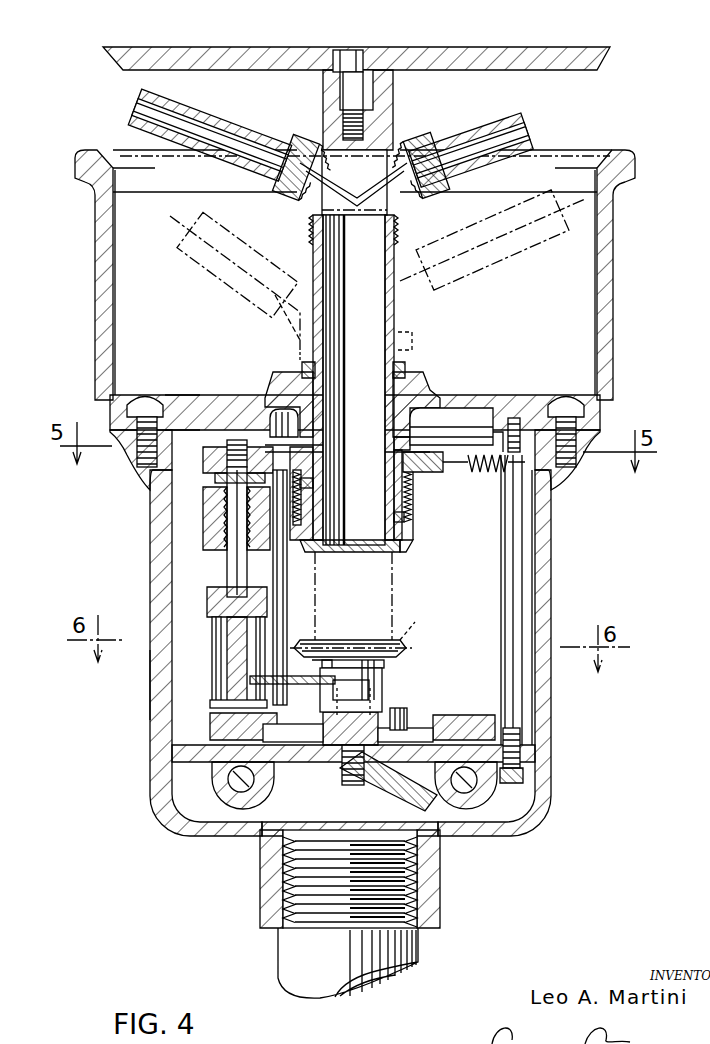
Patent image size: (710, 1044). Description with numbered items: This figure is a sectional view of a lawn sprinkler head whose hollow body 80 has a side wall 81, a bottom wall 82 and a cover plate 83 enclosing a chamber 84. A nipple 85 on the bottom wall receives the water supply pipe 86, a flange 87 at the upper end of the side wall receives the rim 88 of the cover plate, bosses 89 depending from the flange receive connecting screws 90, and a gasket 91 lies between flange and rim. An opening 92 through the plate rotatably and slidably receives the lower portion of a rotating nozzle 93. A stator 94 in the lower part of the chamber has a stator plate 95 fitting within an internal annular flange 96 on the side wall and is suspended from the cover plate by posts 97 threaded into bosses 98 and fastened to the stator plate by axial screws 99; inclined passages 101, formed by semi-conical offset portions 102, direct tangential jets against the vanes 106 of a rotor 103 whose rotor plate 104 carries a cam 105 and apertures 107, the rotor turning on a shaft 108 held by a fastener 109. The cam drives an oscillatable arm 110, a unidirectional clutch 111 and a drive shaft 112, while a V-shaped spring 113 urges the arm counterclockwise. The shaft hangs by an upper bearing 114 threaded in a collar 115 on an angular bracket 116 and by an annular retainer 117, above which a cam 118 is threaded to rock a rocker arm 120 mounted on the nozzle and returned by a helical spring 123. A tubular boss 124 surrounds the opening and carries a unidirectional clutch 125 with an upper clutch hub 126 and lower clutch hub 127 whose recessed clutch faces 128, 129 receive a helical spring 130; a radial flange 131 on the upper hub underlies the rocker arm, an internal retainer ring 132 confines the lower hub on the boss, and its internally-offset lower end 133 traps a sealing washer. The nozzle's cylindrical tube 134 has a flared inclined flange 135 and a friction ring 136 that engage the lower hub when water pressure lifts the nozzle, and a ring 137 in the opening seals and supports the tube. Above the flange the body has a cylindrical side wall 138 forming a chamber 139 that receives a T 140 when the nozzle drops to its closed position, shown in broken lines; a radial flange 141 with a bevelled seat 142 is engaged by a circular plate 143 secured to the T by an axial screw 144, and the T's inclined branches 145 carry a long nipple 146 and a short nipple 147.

The hollow body 80 is at (551, 520).
The side wall 81 is at (150, 680).
The bottom wall 82 is at (470, 838).
The cover plate 83 is at (445, 395).
The chamber 84 is at (165, 585).
The nipple 85 is at (260, 862).
The water supply pipe 86 is at (418, 950).
The flange 87 is at (178, 390).
The rim 88 is at (575, 388).
The bosses 89 is at (130, 462).
The connecting screws 90 is at (142, 392).
The gasket 91 is at (604, 418).
The opening 92 is at (393, 388).
The rotating nozzle 93 is at (312, 275).
The stator 94 is at (210, 765).
The stator plate 95 is at (295, 763).
The internal annular flange 96 is at (172, 750).
The posts 97 is at (290, 612).
The bosses 98 is at (492, 440).
The axial screws 99 is at (522, 737).
The inclined passages 101 is at (472, 784).
The semi-conical offset portions 102 is at (235, 800).
The rotor 103 is at (212, 722).
The rotor plate 104 is at (485, 715).
The cam 105 is at (384, 680).
The vanes 106 is at (263, 737).
The apertures 107 is at (405, 716).
The shaft 108 is at (372, 737).
The fastener 109 is at (372, 790).
The oscillatable arm 110 is at (303, 686).
The unidirectional clutch 111 is at (213, 672).
The drive shaft 112 is at (232, 565).
The V-shaped spring 113 is at (318, 675).
The upper bearing 114 is at (284, 585).
The collar 115 is at (206, 507).
The angular bracket 116 is at (207, 530).
The annular retainer 117 is at (215, 479).
The cam 118 is at (206, 460).
The rocker arm 120 is at (450, 446).
The helical spring 123 is at (490, 472).
The tubular boss 124 is at (394, 425).
The unidirectional clutch 125 is at (410, 538).
The upper clutch hub 126 is at (315, 463).
The lower clutch hub 127 is at (305, 545).
The clutch face 128 is at (318, 483).
The clutch face 129 is at (394, 518).
The helical spring 130 is at (413, 500).
The radial flange 131 is at (420, 472).
The internal retainer ring 132 is at (309, 507).
The internally-offset lower end 133 is at (395, 525).
The cylindrical tube 134 is at (380, 330).
The inclined flange 135 is at (413, 656).
The friction ring 136 is at (413, 542).
The ring 137 is at (300, 358).
The cylindrical side wall 138 is at (607, 273).
The chamber 139 is at (105, 268).
The T 140 is at (395, 120).
The radial flange 141 is at (637, 170).
The bevelled seat 142 is at (140, 175).
The circular plate 143 is at (500, 47).
The axial screw 144 is at (352, 50).
The inclined branches 145 is at (425, 205).
The long nipple 146 is at (262, 108).
The short nipple 147 is at (465, 120).